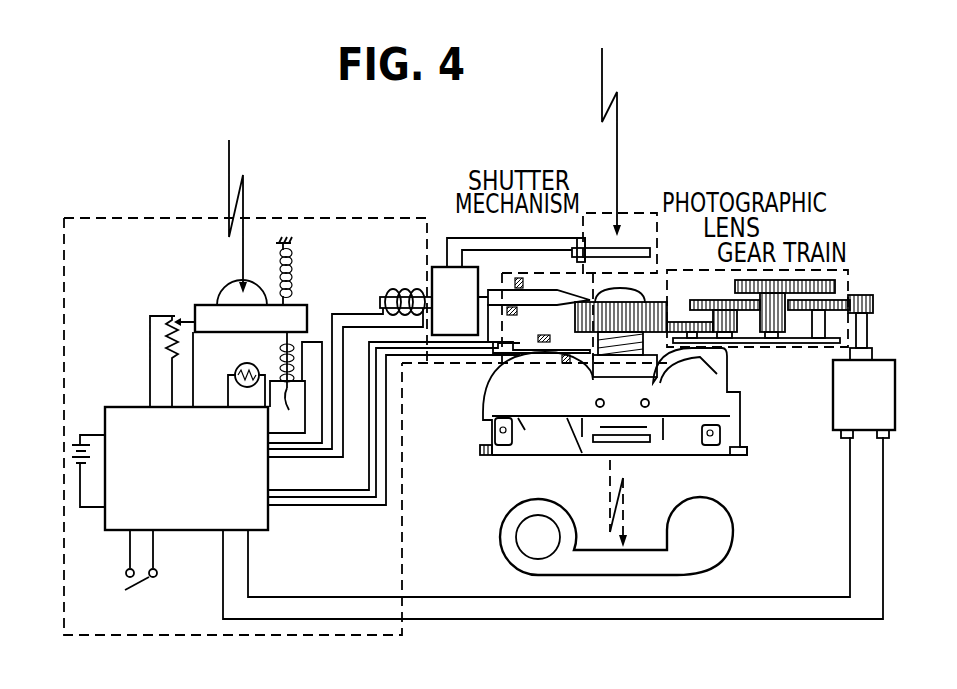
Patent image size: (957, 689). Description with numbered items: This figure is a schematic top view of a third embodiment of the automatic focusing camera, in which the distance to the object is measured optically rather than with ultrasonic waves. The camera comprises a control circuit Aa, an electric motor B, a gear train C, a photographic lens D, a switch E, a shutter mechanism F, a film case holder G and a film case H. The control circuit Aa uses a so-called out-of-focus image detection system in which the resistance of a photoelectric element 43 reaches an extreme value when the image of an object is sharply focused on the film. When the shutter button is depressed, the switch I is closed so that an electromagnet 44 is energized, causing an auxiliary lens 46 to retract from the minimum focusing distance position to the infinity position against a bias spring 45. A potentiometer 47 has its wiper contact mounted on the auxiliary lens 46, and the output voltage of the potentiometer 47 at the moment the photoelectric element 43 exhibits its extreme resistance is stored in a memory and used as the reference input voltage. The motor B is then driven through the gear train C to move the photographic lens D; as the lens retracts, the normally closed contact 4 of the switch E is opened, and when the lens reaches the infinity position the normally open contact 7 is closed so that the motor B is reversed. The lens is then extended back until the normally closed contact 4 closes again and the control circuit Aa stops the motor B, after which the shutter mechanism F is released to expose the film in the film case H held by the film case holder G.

The normally closed contact 4 is at (548, 300).
The normally open contact 7 is at (562, 342).
The photoelectric element 43 is at (241, 363).
The electromagnet 44 is at (288, 405).
The bias spring 45 is at (293, 272).
The auxiliary lens 46 is at (227, 294).
The potentiometer 47 is at (163, 337).
The control circuit Aa is at (370, 218).
The electric motor B is at (887, 372).
The gear train C is at (848, 275).
The photographic lens D is at (655, 277).
The switch E is at (497, 372).
The shutter mechanism F is at (603, 213).
The film case holder G is at (737, 393).
The film case H is at (735, 523).
The switch I is at (140, 583).